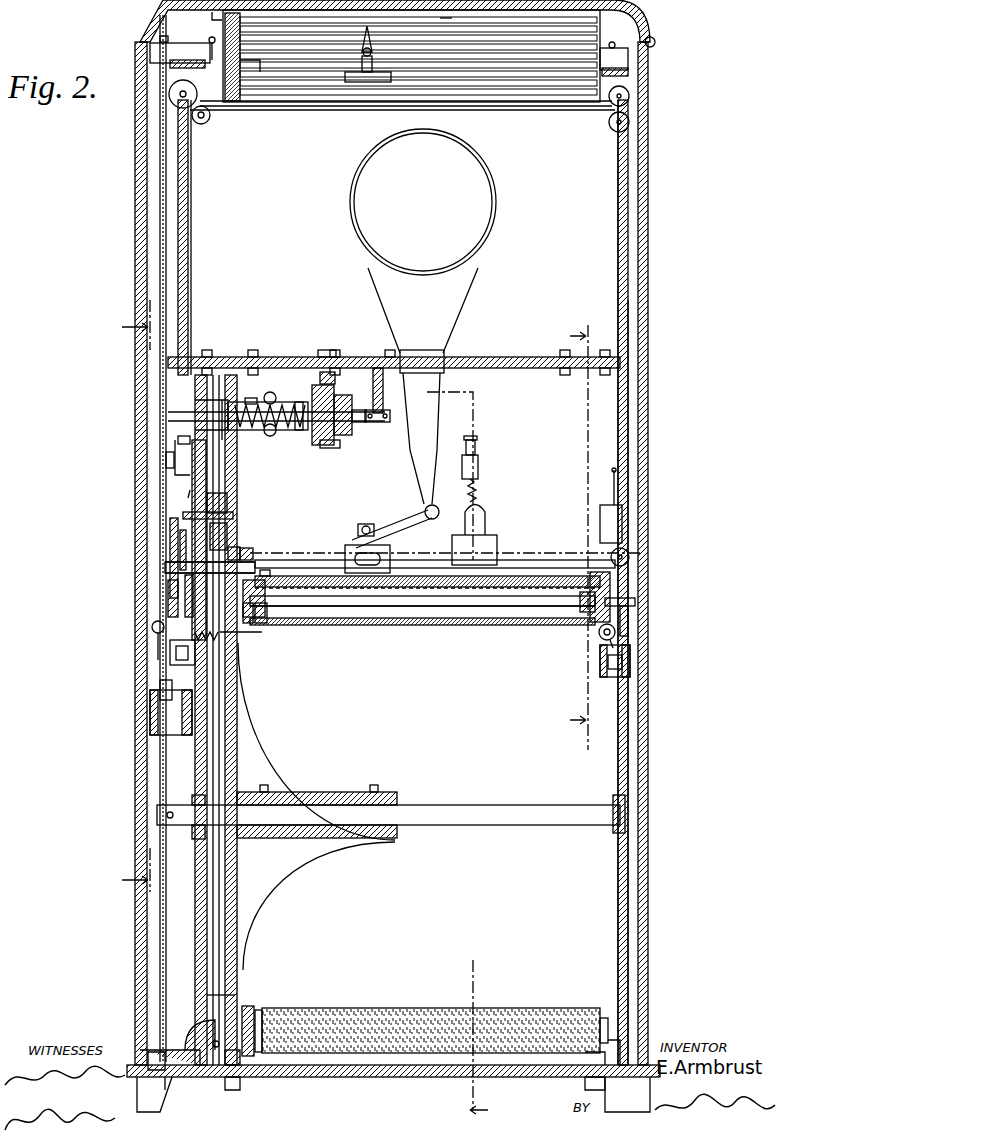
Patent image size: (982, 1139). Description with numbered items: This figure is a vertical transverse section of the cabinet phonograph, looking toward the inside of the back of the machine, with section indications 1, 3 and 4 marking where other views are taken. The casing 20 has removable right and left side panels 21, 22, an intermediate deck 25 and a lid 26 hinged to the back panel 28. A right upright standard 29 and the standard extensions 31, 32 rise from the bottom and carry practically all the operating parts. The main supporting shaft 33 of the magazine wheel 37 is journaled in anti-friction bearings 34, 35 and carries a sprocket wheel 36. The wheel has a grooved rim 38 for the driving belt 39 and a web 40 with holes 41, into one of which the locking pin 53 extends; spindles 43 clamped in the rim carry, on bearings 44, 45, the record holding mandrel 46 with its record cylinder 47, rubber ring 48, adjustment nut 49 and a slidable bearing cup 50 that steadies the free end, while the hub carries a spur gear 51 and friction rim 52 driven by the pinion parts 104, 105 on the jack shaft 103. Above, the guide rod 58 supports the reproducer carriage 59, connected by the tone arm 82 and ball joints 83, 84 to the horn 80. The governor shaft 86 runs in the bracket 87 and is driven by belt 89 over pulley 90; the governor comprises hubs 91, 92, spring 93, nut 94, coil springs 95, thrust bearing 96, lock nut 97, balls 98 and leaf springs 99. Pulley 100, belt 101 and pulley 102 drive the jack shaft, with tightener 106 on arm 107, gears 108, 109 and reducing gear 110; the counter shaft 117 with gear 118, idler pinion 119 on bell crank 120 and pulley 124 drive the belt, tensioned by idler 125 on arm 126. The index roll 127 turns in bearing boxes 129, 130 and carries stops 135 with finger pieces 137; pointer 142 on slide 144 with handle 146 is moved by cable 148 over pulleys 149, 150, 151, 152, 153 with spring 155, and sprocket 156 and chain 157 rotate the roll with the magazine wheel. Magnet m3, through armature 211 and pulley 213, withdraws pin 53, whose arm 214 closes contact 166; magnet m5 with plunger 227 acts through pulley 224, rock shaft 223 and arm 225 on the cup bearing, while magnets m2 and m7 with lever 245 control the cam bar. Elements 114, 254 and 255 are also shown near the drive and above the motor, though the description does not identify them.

The section line 1 is at (461, 564).
The section line 3 is at (130, 596).
The section line 4 is at (571, 536).
The casing 20 is at (648, 222).
The right side panel 21 is at (640, 432).
The left side panel 22 is at (147, 880).
The intermediate deck 25 is at (528, 368).
The lid 26 is at (640, 28).
The back panel 28 is at (395, 1077).
The right upright standard 29 is at (620, 872).
The right standard extension 31 is at (620, 205).
The left standard extension 32 is at (188, 220).
The main supporting shaft 33 is at (503, 820).
The right anti-friction bearing 34 is at (613, 800).
The left anti-friction bearing 35 is at (200, 838).
The sprocket wheel 36 is at (205, 830).
The magazine wheel 37 is at (318, 785).
The grooved rim 38 is at (200, 1045).
The driving belt 39 is at (219, 478).
The web 40 is at (237, 980).
The holes 41 is at (207, 996).
The spindles 43 is at (424, 606).
The anti-friction bearing 44 is at (600, 618).
The anti-friction bearing 45 is at (280, 592).
The record holding mandrel 46 is at (338, 615).
The record cylinder 47 is at (484, 1025).
The elastic rubber ring 48 is at (598, 585).
The adjustment nut 49 is at (606, 1018).
The bearing cup 50 is at (635, 602).
The spur gear 51 is at (248, 1008).
The friction rim 52 is at (262, 1010).
The locking pin 53 is at (240, 640).
The guide rod 58 is at (532, 570).
The reproducer carriage 59 is at (395, 540).
The horn 80 is at (458, 288).
The tone arm 82 is at (405, 530).
The universal ball joint 83 is at (358, 535).
The universal ball joint 84 is at (437, 514).
The governor shaft 86 is at (390, 418).
The bracket 87 is at (383, 395).
The belt 89 is at (326, 370).
The pulley 90 is at (322, 372).
The hub 91 is at (226, 402).
The slidable hub 92 is at (314, 428).
The spring 93 is at (256, 430).
The adjustable nut 94 is at (252, 398).
The coil springs 95 is at (335, 448).
The thrust bearing 96 is at (352, 405).
The lock nut 97 is at (360, 424).
The centrifugal balls 98 is at (270, 392).
The leaf springs 99 is at (278, 432).
The pulley 100 is at (178, 418).
The belt 101 is at (176, 470).
The pulley 102 is at (178, 615).
The jack shaft 103 is at (180, 570).
The spur pinion 104 is at (250, 553).
The friction pinion 105 is at (270, 572).
The belt tightening pulley 106 is at (168, 460).
The spring pressed arm 107 is at (182, 440).
The spur gear 108 is at (180, 582).
The spur gear 109 is at (178, 560).
The speed reducing gear 110 is at (185, 600).
The rod 114 is at (220, 432).
The counter shaft 117 is at (233, 515).
The spur gear 118 is at (185, 497).
The idler pinion 119 is at (181, 542).
The bell crank 120 is at (182, 510).
The pulley 124 is at (227, 500).
The idler pulley 125 is at (236, 544).
The arm 126 is at (227, 534).
The index roll 127 is at (552, 92).
The bearing box 129 is at (620, 42).
The bearing box 130 is at (170, 47).
The mechanical stop 135 is at (226, 30).
The finger piece 137 is at (255, 92).
The pointer 142 is at (364, 36).
The slide 144 is at (352, 82).
The handle 146 is at (370, 60).
The cable 148 is at (222, 106).
The direction pulley 149 is at (629, 556).
The direction pulley 150 is at (628, 124).
The direction pulley 151 is at (176, 96).
The direction pulley 152 is at (628, 97).
The direction pulley 153 is at (203, 122).
The spring 155 is at (322, 575).
The sprocket wheel 156 is at (165, 36).
The roller chain 157 is at (163, 190).
The contact 166 is at (176, 660).
The armature 211 is at (165, 695).
The direction pulley 213 is at (152, 628).
The arm 214 is at (185, 642).
The rock shaft 223 is at (610, 642).
The pulley 224 is at (604, 634).
The arm 225 is at (628, 620).
The plunger 227 is at (630, 662).
The lever 245 is at (614, 475).
The dome 254 is at (485, 520).
The gauge 255 is at (478, 492).
The electromagnet m2 is at (490, 545).
The electromagnet m3 is at (160, 718).
The electromagnet m5 is at (625, 672).
The electromagnet m7 is at (600, 512).